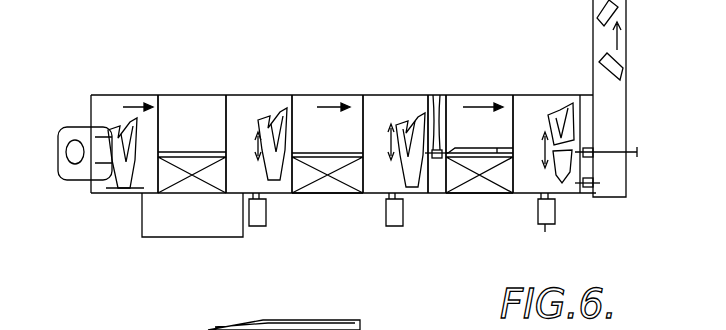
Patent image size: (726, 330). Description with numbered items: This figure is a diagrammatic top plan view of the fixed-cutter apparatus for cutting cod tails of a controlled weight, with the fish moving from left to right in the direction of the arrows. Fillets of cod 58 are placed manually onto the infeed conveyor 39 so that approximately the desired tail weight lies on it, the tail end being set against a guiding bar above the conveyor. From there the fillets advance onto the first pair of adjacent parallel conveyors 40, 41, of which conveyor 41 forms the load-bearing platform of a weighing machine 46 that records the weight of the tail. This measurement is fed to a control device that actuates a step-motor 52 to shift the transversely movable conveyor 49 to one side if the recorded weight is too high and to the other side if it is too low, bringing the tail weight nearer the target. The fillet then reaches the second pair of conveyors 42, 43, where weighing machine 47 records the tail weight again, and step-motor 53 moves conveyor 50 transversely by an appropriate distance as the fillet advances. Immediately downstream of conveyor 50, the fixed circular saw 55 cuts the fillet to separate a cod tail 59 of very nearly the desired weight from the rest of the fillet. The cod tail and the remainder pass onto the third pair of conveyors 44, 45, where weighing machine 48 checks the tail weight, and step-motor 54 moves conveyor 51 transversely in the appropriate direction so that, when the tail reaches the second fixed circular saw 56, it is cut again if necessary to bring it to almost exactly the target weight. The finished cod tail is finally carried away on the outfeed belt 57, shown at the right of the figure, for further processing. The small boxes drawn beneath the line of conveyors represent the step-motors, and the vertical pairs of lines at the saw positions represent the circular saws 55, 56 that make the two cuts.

The infeed conveyor 39 is at (108, 105).
The conveyor 40 is at (185, 95).
The conveyor 41 is at (178, 195).
The conveyor 42 is at (327, 95).
The conveyor 43 is at (323, 195).
The conveyor 44 is at (485, 95).
The conveyor 45 is at (475, 195).
The weighing machine 46 is at (192, 177).
The weighing machine 47 is at (330, 176).
The weighing machine 48 is at (480, 177).
The transversely movable conveyor 49 is at (252, 95).
The transversely movable conveyor 50 is at (381, 95).
The transversely movable conveyor 51 is at (537, 95).
The step-motor 52 is at (266, 216).
The step-motor 53 is at (403, 216).
The step-motor 54 is at (541, 232).
The circular saw 55 is at (440, 119).
The circular saw 56 is at (588, 147).
The outfeed belt 57 is at (623, 200).
The fillets of cod 58 is at (112, 169).
The cod tail 59 is at (563, 172).